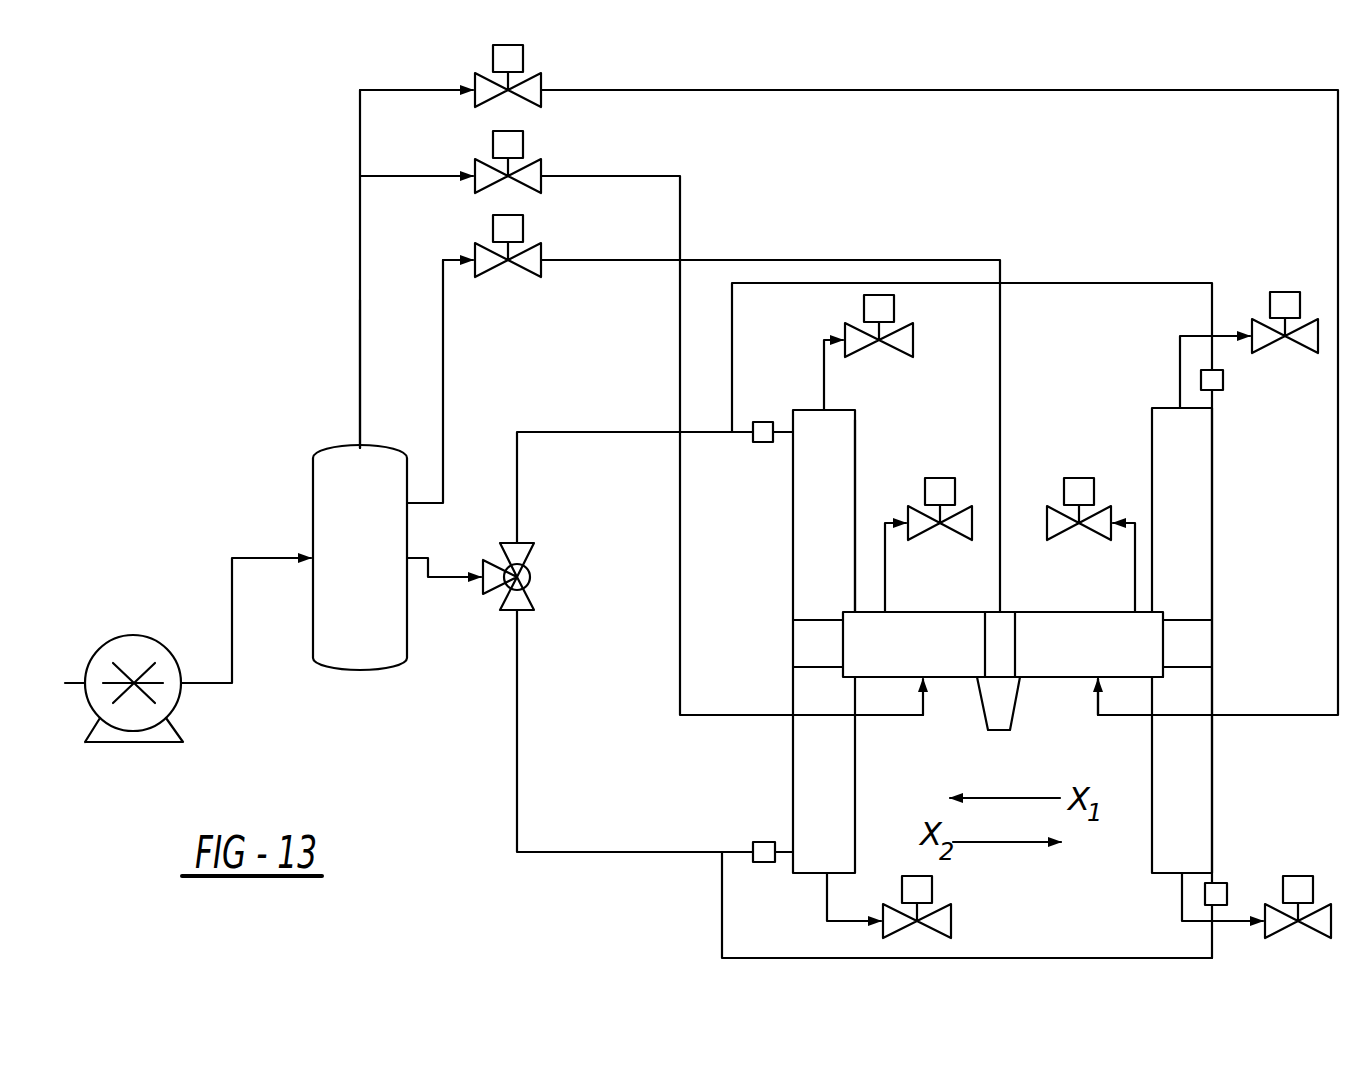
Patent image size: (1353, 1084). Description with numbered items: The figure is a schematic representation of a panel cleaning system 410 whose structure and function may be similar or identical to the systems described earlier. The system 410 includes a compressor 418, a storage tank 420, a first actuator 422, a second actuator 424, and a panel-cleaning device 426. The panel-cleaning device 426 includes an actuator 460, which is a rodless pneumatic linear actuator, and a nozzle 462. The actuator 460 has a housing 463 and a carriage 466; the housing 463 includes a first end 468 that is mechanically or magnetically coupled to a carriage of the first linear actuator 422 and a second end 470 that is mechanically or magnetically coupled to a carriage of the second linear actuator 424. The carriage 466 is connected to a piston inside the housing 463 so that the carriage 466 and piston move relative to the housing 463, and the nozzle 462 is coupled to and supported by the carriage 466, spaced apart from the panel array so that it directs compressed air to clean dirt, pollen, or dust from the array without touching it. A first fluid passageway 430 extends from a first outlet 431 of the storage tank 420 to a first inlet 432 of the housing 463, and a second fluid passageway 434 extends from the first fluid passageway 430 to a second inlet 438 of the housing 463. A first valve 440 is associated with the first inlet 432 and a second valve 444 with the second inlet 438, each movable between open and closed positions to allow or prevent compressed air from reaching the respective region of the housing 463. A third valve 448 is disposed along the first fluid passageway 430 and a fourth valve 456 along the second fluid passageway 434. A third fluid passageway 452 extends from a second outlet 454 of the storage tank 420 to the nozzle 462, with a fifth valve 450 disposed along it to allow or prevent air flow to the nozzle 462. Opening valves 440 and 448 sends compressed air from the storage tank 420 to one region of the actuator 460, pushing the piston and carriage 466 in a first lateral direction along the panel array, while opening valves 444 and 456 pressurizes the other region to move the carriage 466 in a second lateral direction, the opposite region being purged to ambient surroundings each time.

The system 410 is at (256, 143).
The compressor 418 is at (128, 636).
The storage tank 420 is at (328, 450).
The first actuator 422 is at (789, 800).
The second actuator 424 is at (1214, 542).
The panel-cleaning device 426 is at (1042, 611).
The first fluid passageway 430 is at (847, 90).
The first outlet 431 is at (362, 446).
The first inlet 432 is at (1097, 682).
The second fluid passageway 434 is at (667, 176).
The second inlet 438 is at (928, 680).
The first valve 440 is at (1050, 508).
The second valve 444 is at (967, 508).
The third valve 448 is at (543, 98).
The fifth valve 450 is at (522, 272).
The third fluid passageway 452 is at (820, 260).
The second outlet 454 is at (407, 503).
The fourth valve 456 is at (535, 190).
The actuator 460 is at (1047, 680).
The nozzle 462 is at (986, 728).
The housing 463 is at (953, 612).
The carriage 466 is at (988, 636).
The first end 468 is at (855, 622).
The second end 470 is at (1143, 625).